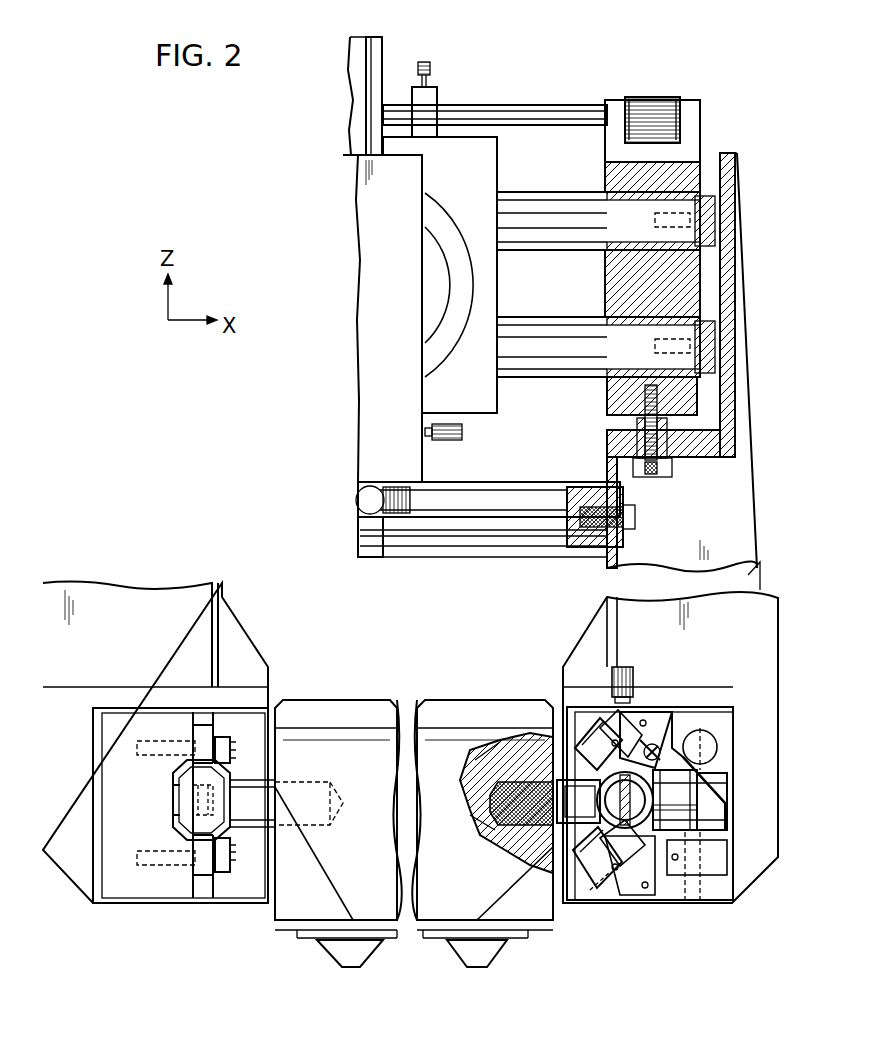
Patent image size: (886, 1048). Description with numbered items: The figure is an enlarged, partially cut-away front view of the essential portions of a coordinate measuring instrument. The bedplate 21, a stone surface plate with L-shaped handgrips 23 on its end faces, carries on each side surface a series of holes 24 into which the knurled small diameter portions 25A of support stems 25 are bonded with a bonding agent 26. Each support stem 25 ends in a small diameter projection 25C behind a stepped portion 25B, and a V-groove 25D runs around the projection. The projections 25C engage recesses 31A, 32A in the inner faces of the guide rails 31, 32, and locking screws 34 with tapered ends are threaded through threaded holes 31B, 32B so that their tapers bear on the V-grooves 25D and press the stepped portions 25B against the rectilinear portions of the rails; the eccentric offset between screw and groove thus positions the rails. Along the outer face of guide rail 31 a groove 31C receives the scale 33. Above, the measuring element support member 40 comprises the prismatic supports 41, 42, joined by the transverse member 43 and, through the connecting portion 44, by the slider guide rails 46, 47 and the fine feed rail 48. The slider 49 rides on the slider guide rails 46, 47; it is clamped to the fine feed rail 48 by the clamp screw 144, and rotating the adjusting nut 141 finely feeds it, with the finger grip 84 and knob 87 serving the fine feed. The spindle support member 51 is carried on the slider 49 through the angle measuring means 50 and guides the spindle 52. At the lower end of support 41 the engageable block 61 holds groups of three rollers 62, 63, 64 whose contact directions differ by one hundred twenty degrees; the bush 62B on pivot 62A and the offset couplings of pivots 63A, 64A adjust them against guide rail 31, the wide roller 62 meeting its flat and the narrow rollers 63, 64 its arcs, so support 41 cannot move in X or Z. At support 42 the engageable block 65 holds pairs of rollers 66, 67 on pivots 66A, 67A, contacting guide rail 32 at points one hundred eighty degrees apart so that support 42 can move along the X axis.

The spindle 52 is at (378, 45).
The clamp screw 144 is at (432, 60).
The slider fine feed rail 48 is at (523, 117).
The adjusting nut 141 is at (648, 100).
The connecting portion 44 is at (703, 112).
The slider 49 is at (497, 150).
The slider guide rail 46 is at (563, 206).
The spindle support member 51 is at (358, 240).
The angle measuring means 50 is at (478, 282).
The measuring element support member 40 is at (750, 268).
The slider guide rail 47 is at (549, 377).
The transverse member 43 is at (513, 495).
The support 41 is at (758, 512).
The support 42 is at (126, 596).
The pivot 66A is at (160, 741).
The roller 66 is at (203, 725).
The handgrip 23 is at (308, 718).
The bedplate 21 is at (353, 712).
The bonding agent 26 is at (490, 795).
The hole 24 is at (505, 782).
The roller 63 is at (610, 722).
The threaded hole 31B is at (600, 726).
The knob 87 is at (626, 667).
The pivot 63A is at (648, 712).
The locking screw 34 is at (185, 795).
The guide rail 31 is at (662, 728).
The finger grip 84 is at (708, 733).
The recess 32A is at (224, 765).
The small diameter portion 25A is at (318, 782).
The bush 62B is at (706, 746).
The recess 31A is at (692, 776).
The threaded hole 32B is at (180, 773).
The guide rail 32 is at (185, 818).
The projection 25C is at (608, 800).
The scale 33 is at (652, 795).
The roller 62 is at (662, 805).
The groove 31C is at (662, 815).
The support stem 25 is at (250, 827).
The engageable block 61 is at (722, 858).
The pivot 67A is at (140, 868).
The engageable block 65 is at (150, 886).
The roller 67 is at (205, 884).
The roller 64 is at (592, 882).
The stepped portion 25B is at (600, 870).
The V-groove 25D is at (630, 870).
The pivot 64A is at (628, 882).
The pivot 62A is at (700, 876).